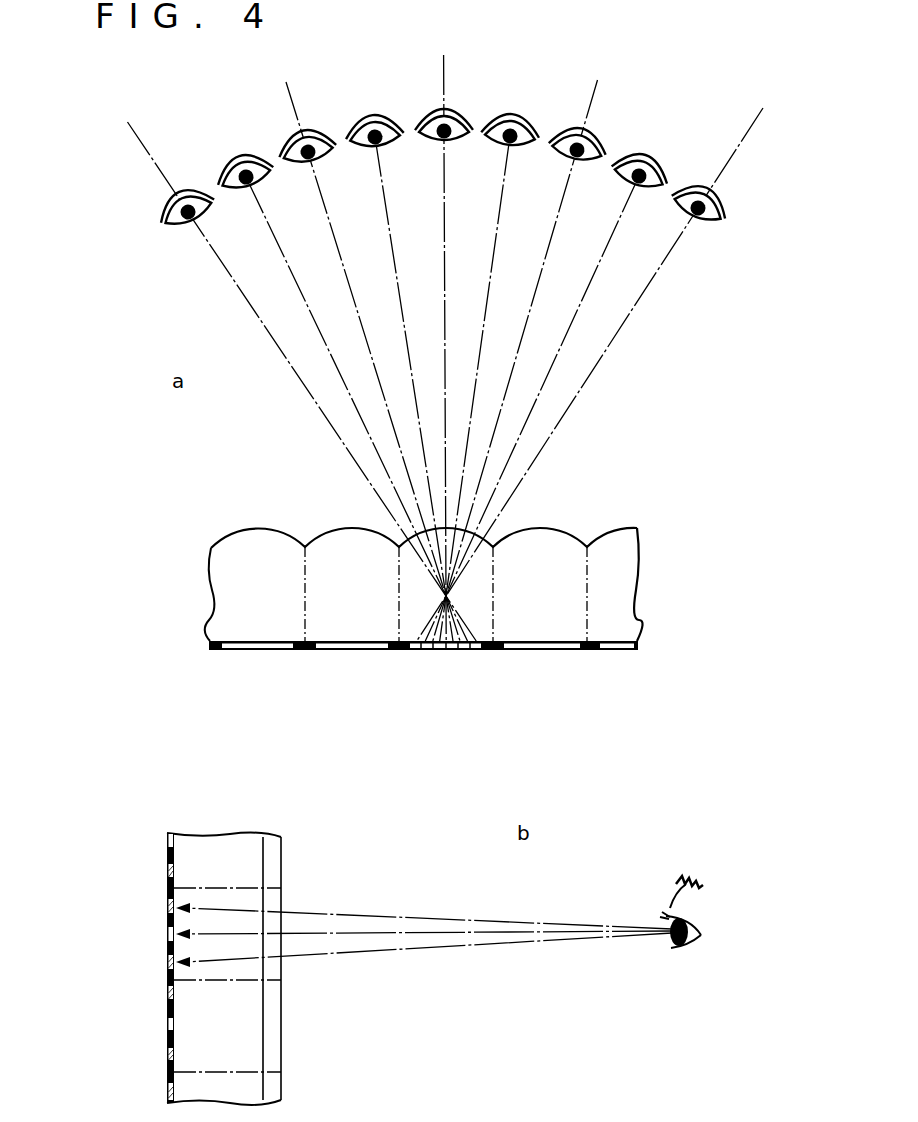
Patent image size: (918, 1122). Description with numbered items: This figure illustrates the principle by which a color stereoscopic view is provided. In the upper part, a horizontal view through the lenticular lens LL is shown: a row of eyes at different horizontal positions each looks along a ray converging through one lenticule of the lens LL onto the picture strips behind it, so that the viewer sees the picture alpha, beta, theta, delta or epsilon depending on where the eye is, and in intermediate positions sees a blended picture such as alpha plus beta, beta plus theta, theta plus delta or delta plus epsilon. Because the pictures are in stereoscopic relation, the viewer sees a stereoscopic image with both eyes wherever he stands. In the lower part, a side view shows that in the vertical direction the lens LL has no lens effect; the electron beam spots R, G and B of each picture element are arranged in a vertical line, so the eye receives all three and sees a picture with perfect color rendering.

The lenticular lens LL is at (226, 608).
The red electron beam spot R is at (167, 909).
The green electron beam spot G is at (167, 935).
The blue electron beam spot B is at (167, 963).